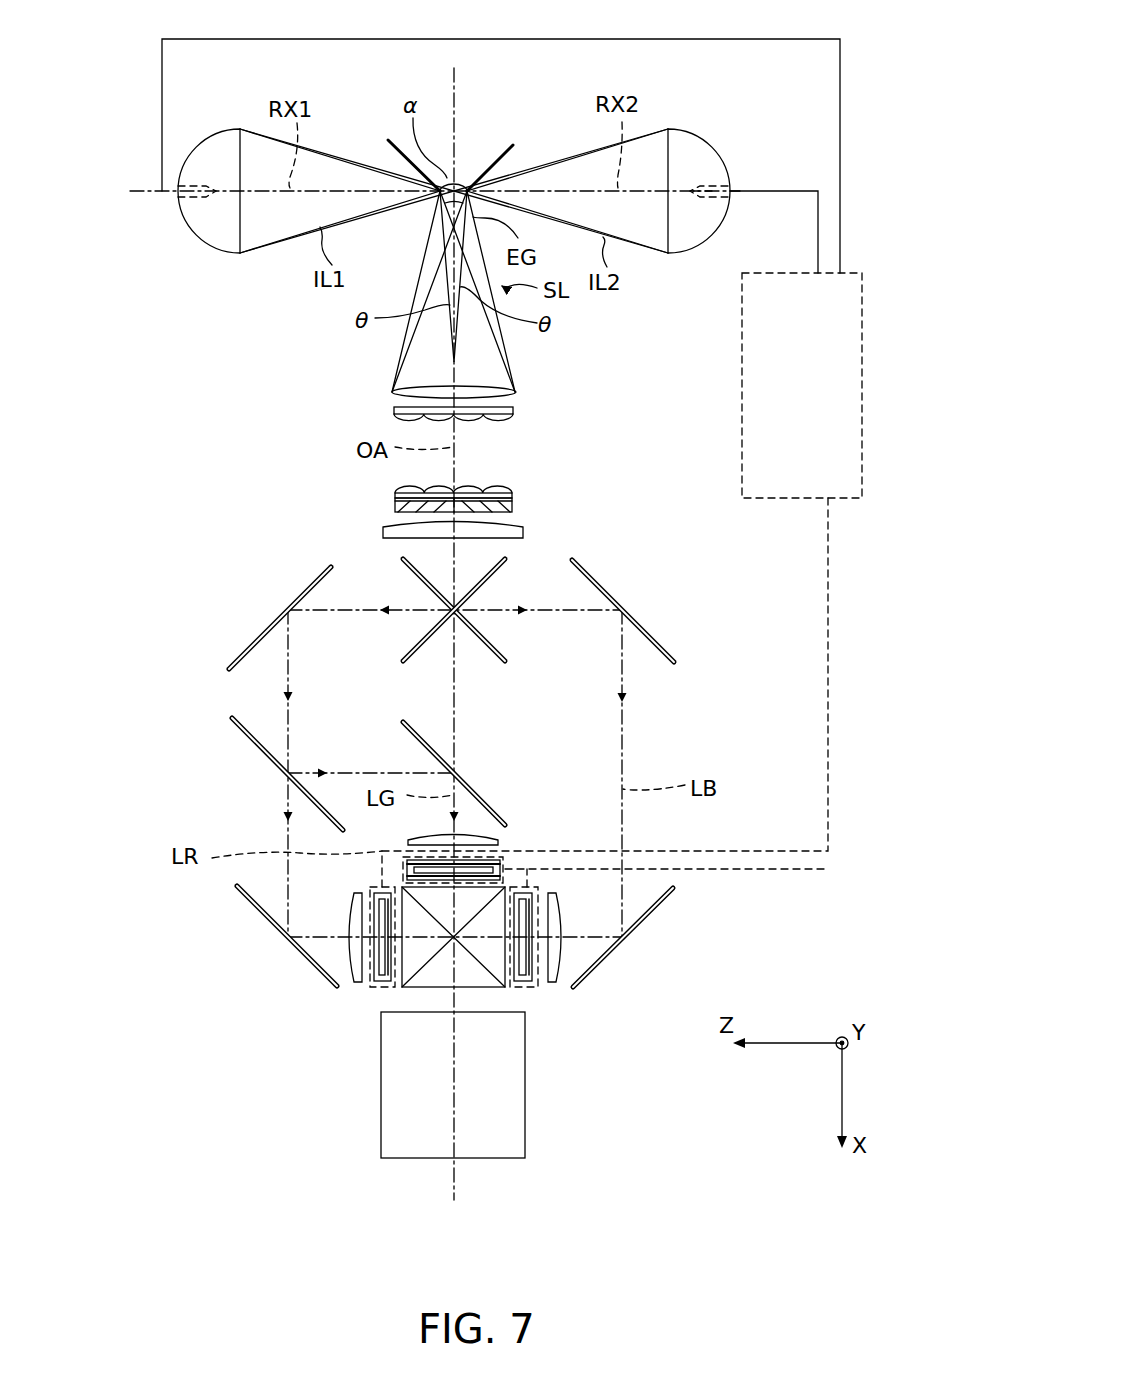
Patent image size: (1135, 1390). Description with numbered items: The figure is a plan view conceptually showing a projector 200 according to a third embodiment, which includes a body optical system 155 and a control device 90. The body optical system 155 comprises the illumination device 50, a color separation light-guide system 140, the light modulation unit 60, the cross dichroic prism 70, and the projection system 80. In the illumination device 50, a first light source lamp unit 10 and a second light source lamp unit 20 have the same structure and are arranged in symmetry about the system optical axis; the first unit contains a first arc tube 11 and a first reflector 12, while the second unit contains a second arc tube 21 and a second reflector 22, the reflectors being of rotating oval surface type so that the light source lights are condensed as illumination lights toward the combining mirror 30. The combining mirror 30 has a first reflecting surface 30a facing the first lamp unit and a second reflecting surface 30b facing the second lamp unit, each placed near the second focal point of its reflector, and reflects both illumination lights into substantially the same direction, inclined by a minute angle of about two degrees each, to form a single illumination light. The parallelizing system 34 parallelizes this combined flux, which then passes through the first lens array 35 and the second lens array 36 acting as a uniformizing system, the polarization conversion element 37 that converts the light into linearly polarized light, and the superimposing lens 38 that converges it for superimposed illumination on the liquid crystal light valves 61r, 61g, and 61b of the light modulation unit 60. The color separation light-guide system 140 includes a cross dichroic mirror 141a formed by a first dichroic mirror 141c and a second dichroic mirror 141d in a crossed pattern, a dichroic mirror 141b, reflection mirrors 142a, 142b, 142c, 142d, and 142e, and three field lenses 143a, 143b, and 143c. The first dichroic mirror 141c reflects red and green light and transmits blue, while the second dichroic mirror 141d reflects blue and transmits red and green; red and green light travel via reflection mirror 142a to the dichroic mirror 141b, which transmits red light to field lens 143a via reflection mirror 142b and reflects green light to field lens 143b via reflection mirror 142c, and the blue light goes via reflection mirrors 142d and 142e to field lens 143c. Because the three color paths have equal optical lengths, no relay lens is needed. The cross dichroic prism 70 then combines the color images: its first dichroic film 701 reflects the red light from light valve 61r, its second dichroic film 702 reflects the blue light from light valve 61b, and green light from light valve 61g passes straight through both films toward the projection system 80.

The projector 200 is at (871, 22).
The first light source lamp unit 10 is at (192, 246).
The first arc tube 11 is at (198, 198).
The first reflector 12 is at (224, 246).
The second light source lamp unit 20 is at (718, 222).
The second arc tube 21 is at (707, 182).
The second reflector 22 is at (672, 127).
The combining mirror 30 is at (450, 130).
The first reflecting surface 30a is at (402, 160).
The second reflecting surface 30b is at (515, 157).
The parallelizing system 34 is at (517, 390).
The first lens array 35 is at (392, 413).
The second lens array 36 is at (517, 487).
The polarization conversion element 37 is at (513, 504).
The superimposing lens 38 is at (525, 530).
The illumination device 50 is at (449, 303).
The light modulation unit 60 is at (435, 954).
The liquid crystal light valve 61g is at (403, 870).
The liquid crystal light valve 61r is at (370, 992).
The liquid crystal light valve 61b is at (527, 990).
The cross dichroic prism 70 is at (473, 990).
The first dichroic film 701 is at (487, 985).
The second dichroic film 702 is at (417, 990).
The projection system 80 is at (392, 1115).
The control device 90 is at (767, 506).
The color separation light-guide system 140 is at (462, 709).
The cross dichroic mirror 141a is at (507, 682).
The dichroic mirror 141b is at (263, 743).
The first dichroic mirror 141c is at (503, 563).
The second dichroic mirror 141d is at (410, 560).
The reflection mirror 142a is at (297, 600).
The reflection mirror 142b is at (248, 895).
The reflection mirror 142c is at (418, 732).
The reflection mirror 142d is at (607, 583).
The reflection mirror 142e is at (650, 917).
The field lens 143a is at (350, 960).
The field lens 143b is at (408, 840).
The field lens 143c is at (568, 953).
The body optical system 155 is at (694, 630).